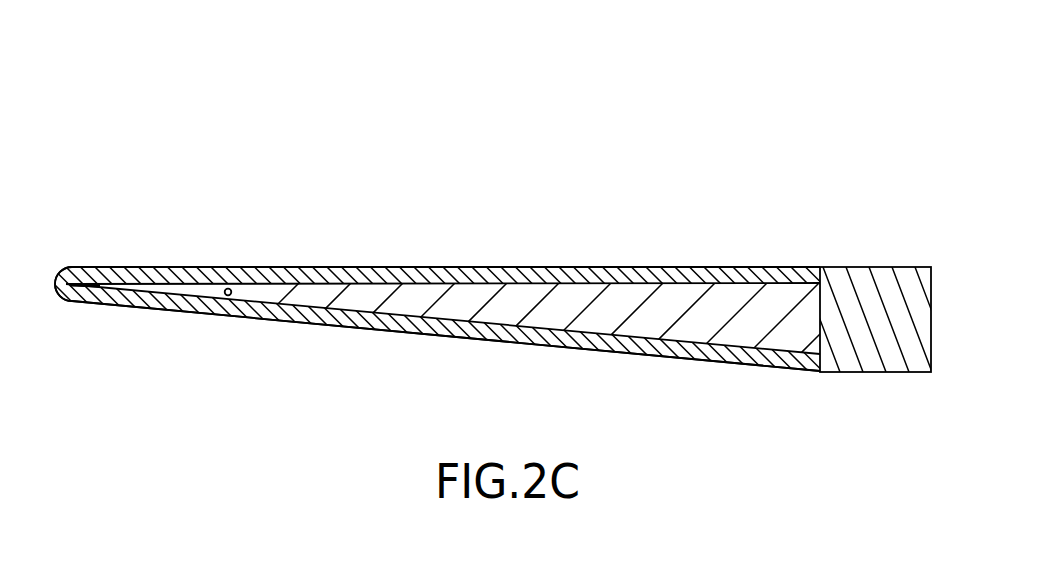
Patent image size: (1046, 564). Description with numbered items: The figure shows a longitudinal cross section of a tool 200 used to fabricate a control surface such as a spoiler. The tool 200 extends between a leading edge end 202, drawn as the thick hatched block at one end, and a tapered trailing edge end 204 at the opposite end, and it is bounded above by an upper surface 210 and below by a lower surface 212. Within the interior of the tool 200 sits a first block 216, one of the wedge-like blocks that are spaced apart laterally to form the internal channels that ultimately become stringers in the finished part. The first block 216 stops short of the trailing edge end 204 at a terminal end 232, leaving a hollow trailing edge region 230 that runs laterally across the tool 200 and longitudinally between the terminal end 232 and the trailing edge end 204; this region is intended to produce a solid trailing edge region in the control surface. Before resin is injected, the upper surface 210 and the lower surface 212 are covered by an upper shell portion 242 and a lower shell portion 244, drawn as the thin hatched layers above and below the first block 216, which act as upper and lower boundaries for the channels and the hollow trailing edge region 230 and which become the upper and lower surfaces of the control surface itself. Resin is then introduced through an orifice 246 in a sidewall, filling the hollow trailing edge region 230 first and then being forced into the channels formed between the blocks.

The tool 200 is at (140, 105).
The leading edge end 202 is at (870, 298).
The trailing edge end 204 is at (143, 285).
The upper surface 210 is at (558, 212).
The lower surface 212 is at (449, 350).
The first block 216 is at (733, 322).
The hollow trailing edge region 230 is at (198, 277).
The terminal end 232 is at (257, 291).
The upper shell portion 242 is at (396, 283).
The lower shell portion 244 is at (337, 326).
The orifice 246 is at (226, 296).